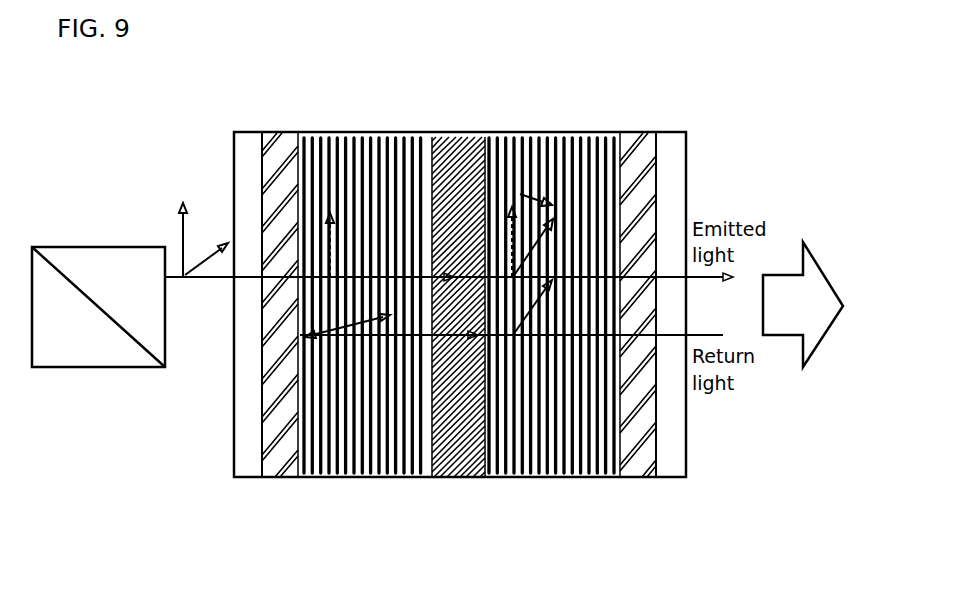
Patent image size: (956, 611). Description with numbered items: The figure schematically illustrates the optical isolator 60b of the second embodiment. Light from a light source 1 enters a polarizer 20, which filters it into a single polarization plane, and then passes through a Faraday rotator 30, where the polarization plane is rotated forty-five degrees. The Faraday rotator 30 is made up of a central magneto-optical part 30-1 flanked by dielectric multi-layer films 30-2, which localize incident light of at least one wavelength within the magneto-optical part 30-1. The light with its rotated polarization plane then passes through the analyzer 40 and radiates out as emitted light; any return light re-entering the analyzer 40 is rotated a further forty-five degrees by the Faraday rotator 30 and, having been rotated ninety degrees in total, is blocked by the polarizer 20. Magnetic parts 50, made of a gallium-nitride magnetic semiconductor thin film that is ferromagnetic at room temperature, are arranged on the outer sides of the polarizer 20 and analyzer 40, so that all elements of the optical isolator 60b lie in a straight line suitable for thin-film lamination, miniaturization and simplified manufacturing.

The light source 1 is at (100, 247).
The polarizer 20 is at (278, 140).
The Faraday rotator 30 is at (458, 332).
The magneto-optical part 30-1 is at (463, 478).
The dielectric multi-layer film 30-2 is at (353, 478).
The analyzer 40 is at (638, 138).
The magnetic part 50 is at (252, 148).
The optical isolator 60b is at (702, 118).